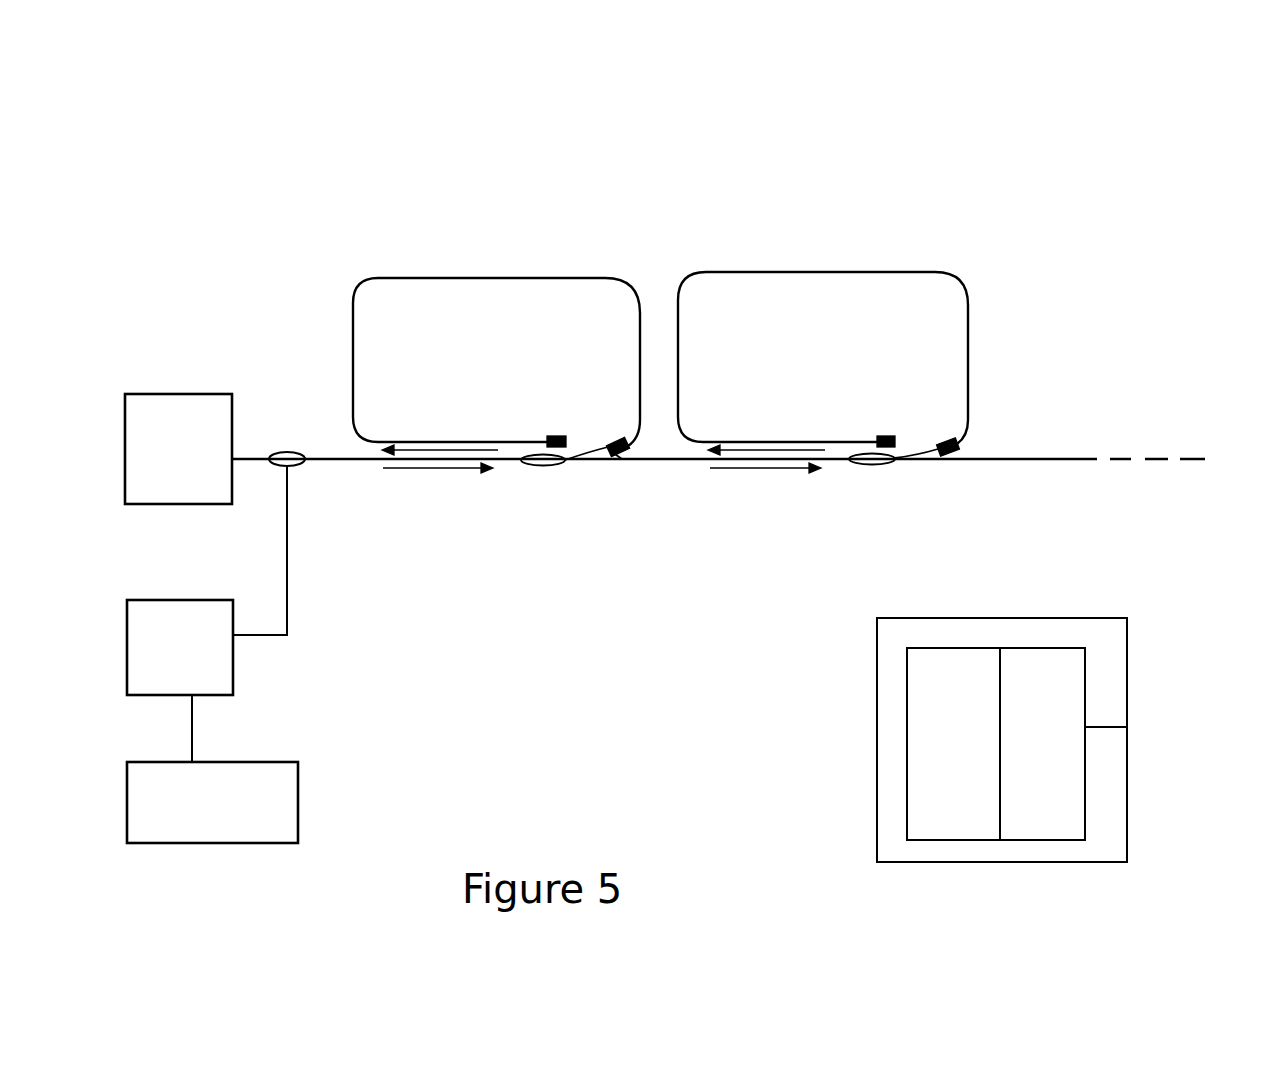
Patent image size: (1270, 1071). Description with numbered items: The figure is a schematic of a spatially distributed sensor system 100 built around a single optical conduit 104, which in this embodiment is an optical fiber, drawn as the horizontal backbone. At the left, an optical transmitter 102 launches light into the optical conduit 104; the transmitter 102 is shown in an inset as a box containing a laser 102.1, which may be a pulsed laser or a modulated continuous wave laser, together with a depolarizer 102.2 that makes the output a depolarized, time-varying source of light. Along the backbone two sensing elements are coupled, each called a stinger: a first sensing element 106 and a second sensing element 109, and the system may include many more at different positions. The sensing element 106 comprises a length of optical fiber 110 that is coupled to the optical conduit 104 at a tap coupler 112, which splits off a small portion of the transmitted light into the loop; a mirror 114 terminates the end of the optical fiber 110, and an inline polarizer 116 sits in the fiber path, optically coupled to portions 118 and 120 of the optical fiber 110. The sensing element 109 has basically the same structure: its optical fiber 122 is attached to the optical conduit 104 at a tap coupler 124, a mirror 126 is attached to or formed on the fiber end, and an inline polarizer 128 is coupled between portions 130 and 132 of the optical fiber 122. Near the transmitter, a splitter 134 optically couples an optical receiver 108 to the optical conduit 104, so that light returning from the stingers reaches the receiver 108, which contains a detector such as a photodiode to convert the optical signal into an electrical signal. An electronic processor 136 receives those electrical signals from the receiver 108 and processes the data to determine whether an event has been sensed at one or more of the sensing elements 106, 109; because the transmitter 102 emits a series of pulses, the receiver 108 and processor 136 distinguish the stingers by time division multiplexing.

The spatially distributed sensor system 100 is at (975, 106).
The optical transmitter 102 is at (182, 402).
The pulsed laser 102.1 is at (940, 748).
The depolarizer 102.2 is at (1030, 766).
The optical conduit 104 is at (338, 464).
The sensing element 106 is at (578, 215).
The optical receiver 108 is at (233, 678).
The sensing element 109 is at (978, 222).
The optical fiber 110 is at (366, 278).
The tap coupler 112 is at (555, 466).
The mirror 114 is at (556, 435).
The inline polarizer 116 is at (628, 455).
The portion of optical fiber 118 is at (600, 450).
The portion of optical fiber 120 is at (626, 438).
The optical fiber 122 is at (958, 291).
The tap coupler 124 is at (873, 465).
The mirror 126 is at (884, 435).
The inline polarizer 128 is at (942, 440).
The portion of optical fiber 130 is at (927, 455).
The portion of optical fiber 132 is at (966, 439).
The splitter 134 is at (289, 451).
The electronic processor 136 is at (298, 798).